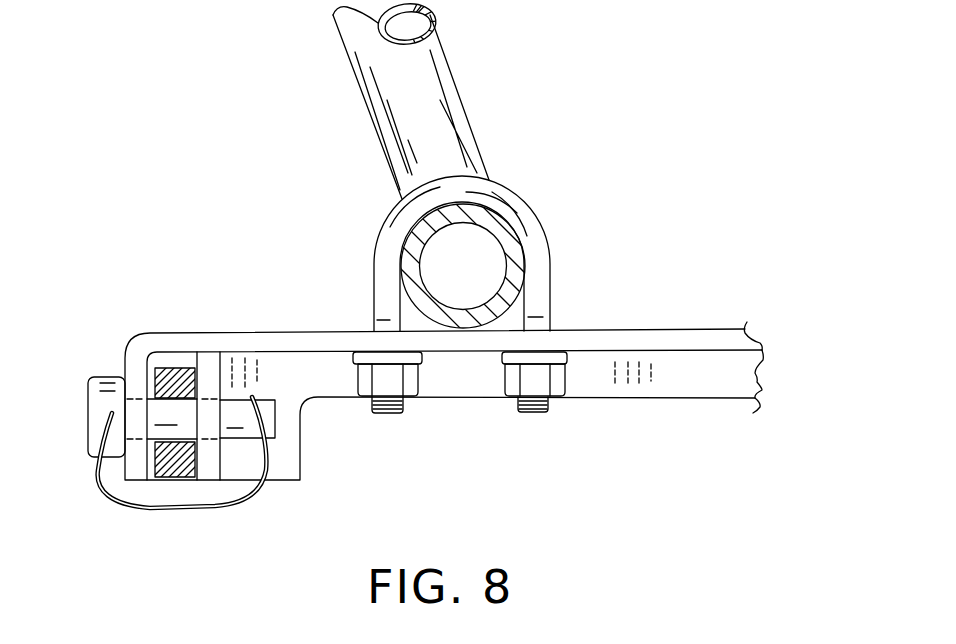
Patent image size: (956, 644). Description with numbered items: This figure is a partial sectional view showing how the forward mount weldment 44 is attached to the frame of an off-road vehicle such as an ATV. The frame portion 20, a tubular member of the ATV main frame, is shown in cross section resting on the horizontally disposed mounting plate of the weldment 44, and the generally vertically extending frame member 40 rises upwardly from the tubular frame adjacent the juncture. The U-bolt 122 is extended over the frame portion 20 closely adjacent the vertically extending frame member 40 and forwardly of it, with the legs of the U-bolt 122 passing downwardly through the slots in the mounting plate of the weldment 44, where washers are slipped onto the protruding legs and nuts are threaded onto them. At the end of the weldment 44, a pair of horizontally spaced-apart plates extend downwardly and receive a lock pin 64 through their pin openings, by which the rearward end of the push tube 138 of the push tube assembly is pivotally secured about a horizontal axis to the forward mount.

The generally vertically extending frame member 40 is at (445, 118).
The U-bolt 122 is at (527, 210).
The frame portion 20 is at (520, 287).
The forward mount weldment 44 is at (676, 322).
The lock pin 64 is at (105, 402).
The push tube 138 is at (175, 470).